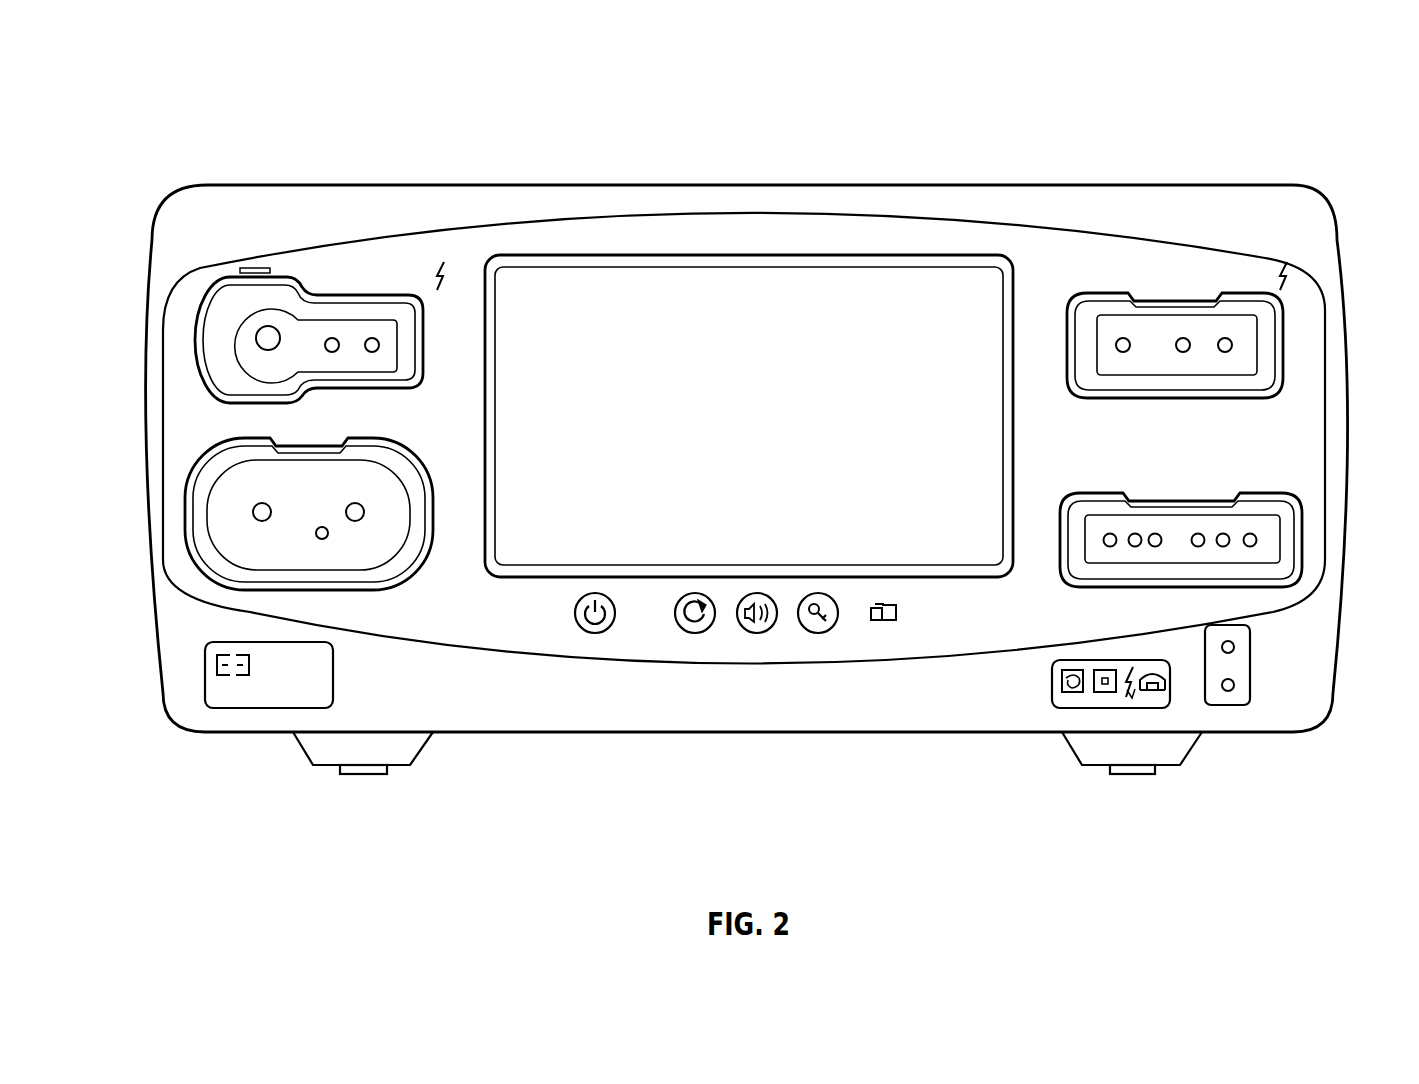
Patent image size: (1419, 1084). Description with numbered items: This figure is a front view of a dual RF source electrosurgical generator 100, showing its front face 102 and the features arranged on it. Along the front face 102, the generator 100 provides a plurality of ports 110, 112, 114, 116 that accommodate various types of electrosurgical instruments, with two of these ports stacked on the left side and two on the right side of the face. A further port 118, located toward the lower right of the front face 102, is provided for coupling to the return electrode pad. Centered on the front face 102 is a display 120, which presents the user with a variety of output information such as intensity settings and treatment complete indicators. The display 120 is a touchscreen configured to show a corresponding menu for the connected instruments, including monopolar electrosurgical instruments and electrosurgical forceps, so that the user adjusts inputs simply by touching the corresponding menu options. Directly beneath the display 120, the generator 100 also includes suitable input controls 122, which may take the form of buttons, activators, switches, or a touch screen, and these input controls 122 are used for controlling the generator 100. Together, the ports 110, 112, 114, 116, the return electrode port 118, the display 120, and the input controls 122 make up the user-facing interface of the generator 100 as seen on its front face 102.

The generator 100 is at (172, 92).
The front face 102 is at (1123, 210).
The port 110 is at (252, 353).
The port 112 is at (1243, 345).
The port 114 is at (252, 525).
The port 116 is at (1247, 555).
The port 118 is at (1240, 668).
The display 120 is at (853, 343).
The input controls 122 is at (893, 642).